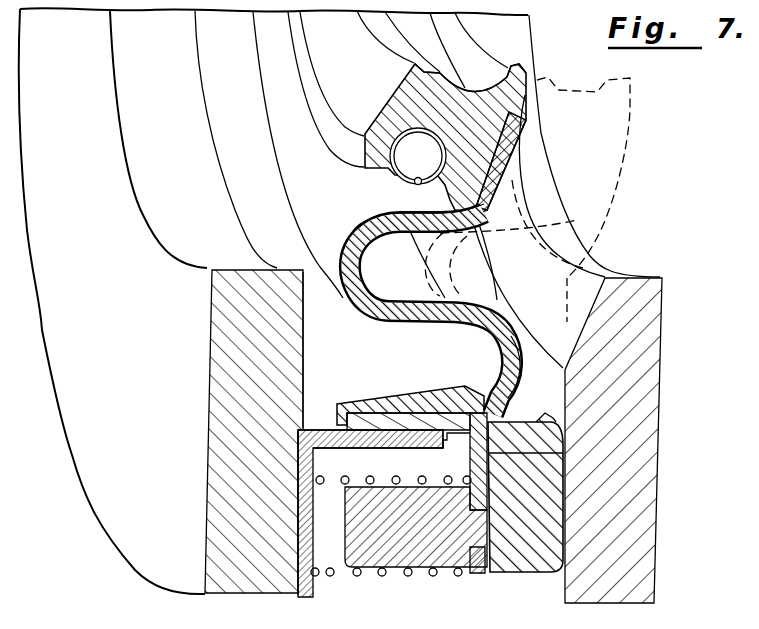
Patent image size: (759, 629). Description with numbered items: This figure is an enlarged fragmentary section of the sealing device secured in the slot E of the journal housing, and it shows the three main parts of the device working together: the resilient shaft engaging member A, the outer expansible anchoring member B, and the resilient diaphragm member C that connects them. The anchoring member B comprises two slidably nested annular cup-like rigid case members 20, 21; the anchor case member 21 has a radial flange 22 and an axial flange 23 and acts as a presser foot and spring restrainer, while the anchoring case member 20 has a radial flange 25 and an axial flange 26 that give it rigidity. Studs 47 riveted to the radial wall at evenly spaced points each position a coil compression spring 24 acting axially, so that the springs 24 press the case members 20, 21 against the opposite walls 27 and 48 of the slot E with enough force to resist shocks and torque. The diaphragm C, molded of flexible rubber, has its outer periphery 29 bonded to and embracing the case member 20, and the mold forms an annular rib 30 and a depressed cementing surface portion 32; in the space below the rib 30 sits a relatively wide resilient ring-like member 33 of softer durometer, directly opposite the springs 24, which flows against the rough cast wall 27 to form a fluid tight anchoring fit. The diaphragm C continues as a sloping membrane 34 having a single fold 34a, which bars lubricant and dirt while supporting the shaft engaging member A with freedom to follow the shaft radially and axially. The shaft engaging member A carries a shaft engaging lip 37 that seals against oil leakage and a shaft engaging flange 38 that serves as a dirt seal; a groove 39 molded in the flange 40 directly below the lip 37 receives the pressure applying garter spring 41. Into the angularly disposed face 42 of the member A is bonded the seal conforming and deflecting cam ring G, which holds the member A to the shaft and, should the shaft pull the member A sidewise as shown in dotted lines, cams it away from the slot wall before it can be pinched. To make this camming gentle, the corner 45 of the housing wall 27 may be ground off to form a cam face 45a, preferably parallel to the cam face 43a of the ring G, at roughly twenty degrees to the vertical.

The anchoring case member 20 is at (402, 418).
The anchor case member 21 is at (365, 448).
The radial flange 22 is at (304, 537).
The axial flange 23 is at (434, 449).
The springs 24 is at (356, 576).
The radial flange 25 is at (563, 445).
The axial flange 26 is at (466, 406).
The wall 27 is at (564, 391).
The outer periphery 29 is at (366, 406).
The annular rib 30 is at (524, 421).
The depressed cementing surface portion 32 is at (486, 573).
The resilient ring-like member 33 is at (553, 487).
The sloping membrane 34 is at (505, 325).
The single fold 34a is at (353, 232).
The shaft engaging lip 37 is at (420, 66).
The shaft engaging flange 38 is at (523, 67).
The groove 39 is at (418, 156).
The flange 40 is at (463, 88).
The garter spring 41 is at (414, 183).
The angularly disposed face 42 is at (507, 135).
The cam face 43a is at (497, 198).
The corner 45 is at (600, 258).
The cam face 45a is at (580, 284).
The studs 47 is at (399, 554).
The wall 48 is at (306, 344).
The shaft engaging member A is at (392, 94).
The outer expansible anchoring member B is at (292, 501).
The resilient diaphragm member C is at (524, 340).
The slot E is at (303, 366).
The seal conforming and deflecting cam ring G is at (512, 173).